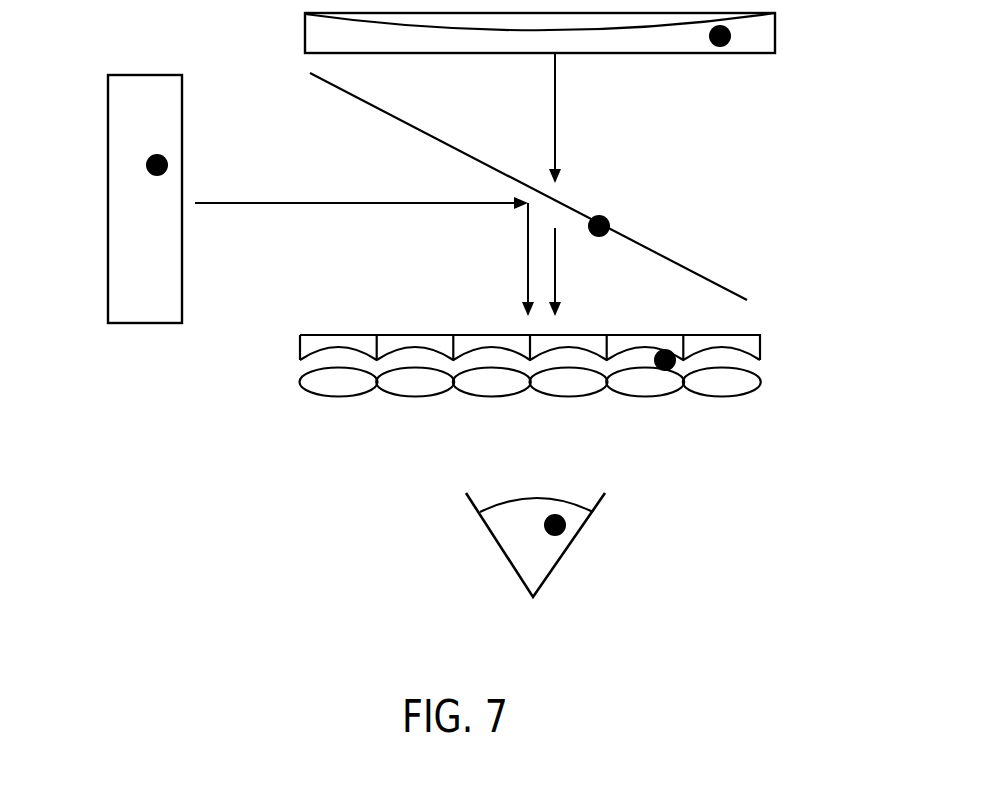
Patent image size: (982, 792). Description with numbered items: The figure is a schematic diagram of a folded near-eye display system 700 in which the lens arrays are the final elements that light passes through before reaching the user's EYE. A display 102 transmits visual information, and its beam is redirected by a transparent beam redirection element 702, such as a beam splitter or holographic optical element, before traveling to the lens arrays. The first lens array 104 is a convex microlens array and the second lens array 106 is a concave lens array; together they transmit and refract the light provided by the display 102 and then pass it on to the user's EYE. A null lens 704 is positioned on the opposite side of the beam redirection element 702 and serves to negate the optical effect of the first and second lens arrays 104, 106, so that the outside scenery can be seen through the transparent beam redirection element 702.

The folded near-eye display system 700 is at (299, 659).
The display 102 is at (146, 167).
The first lens array 104 is at (675, 366).
The second lens array 106 is at (312, 400).
The transparent beam redirection element 702 is at (610, 222).
The null lens 704 is at (731, 34).
The eye EYE is at (565, 529).